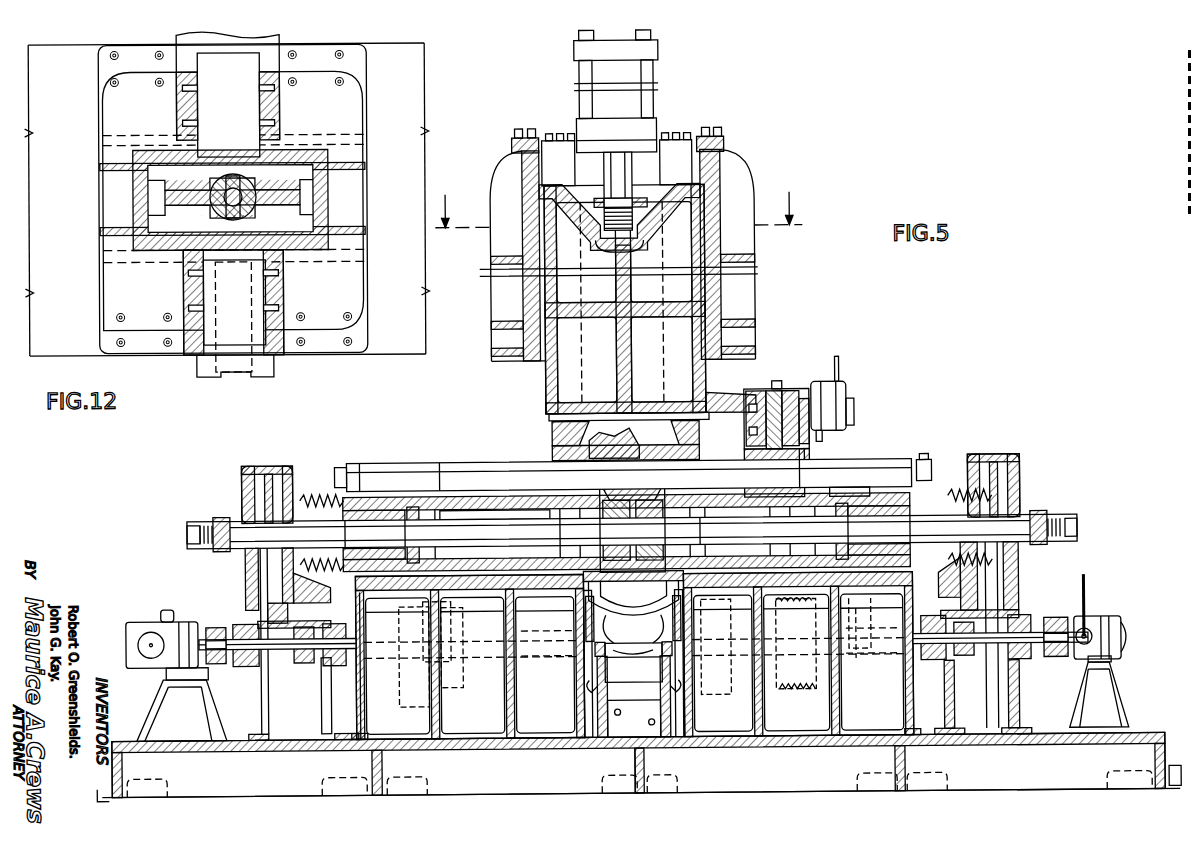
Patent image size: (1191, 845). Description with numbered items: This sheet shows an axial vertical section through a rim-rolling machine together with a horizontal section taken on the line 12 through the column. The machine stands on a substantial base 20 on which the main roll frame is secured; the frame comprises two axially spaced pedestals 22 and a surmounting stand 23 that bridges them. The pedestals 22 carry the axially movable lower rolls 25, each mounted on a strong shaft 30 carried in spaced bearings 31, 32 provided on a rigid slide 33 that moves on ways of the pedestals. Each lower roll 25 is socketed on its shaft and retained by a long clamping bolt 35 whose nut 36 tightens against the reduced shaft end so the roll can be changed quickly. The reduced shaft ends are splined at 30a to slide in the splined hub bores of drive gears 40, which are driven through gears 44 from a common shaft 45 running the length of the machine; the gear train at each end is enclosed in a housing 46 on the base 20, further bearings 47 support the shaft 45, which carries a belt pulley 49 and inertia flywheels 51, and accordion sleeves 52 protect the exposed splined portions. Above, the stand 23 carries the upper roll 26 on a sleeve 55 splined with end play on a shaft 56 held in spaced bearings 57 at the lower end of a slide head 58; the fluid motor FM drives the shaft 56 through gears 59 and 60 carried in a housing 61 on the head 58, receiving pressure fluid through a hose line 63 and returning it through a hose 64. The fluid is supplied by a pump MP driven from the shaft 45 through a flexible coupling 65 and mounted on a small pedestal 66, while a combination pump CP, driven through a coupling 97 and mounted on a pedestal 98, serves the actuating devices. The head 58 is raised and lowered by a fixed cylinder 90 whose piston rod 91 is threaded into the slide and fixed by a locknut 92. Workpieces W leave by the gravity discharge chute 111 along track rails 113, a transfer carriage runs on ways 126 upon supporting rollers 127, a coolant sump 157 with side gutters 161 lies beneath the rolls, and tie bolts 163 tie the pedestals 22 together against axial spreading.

In FIG. 5, the base 20 is at (1150, 737).
In FIG. 5, the pedestal 22 is at (355, 706).
In FIG. 12, the stand 23 is at (280, 110).
In FIG. 5, the stand 23 is at (733, 302).
In FIG. 5, the lower roll 25 is at (635, 583).
In FIG. 5, the upper roll 26 is at (630, 436).
In FIG. 5, the shaft 30 is at (632, 531).
In FIG. 5, the splined portion 30a is at (324, 505).
In FIG. 5, the bearing 31 is at (540, 490).
In FIG. 5, the bearing 32 is at (385, 498).
In FIG. 5, the slide 33 is at (483, 582).
In FIG. 5, the clamping bolt 35 is at (210, 541).
In FIG. 5, the nut 36 is at (226, 515).
In FIG. 5, the drive gear 40 is at (278, 467).
In FIG. 5, the gear 44 is at (302, 660).
In FIG. 5, the common shaft 45 is at (275, 657).
In FIG. 5, the housing 46 is at (255, 615).
In FIG. 5, the bearing 47 is at (450, 686).
In FIG. 5, the pulley 49 is at (792, 688).
In FIG. 5, the inertia flywheel 51 is at (405, 705).
In FIG. 5, the accordion sleeve 52 is at (326, 560).
In FIG. 5, the sleeve 55 is at (603, 450).
In FIG. 5, the upper roll shaft 56 is at (548, 468).
In FIG. 5, the bearing 57 is at (560, 440).
In FIG. 12, the slide head 58 is at (172, 252).
In FIG. 5, the slide head 58 is at (730, 394).
In FIG. 5, the gear 59 is at (806, 493).
In FIG. 5, the gear 60 is at (762, 398).
In FIG. 5, the housing 61 is at (792, 392).
In FIG. 5, the flexible hose line 63 is at (1087, 598).
In FIG. 5, the flexible hose 64 is at (822, 440).
In FIG. 5, the flexible coupling 65 is at (1052, 658).
In FIG. 5, the pedestal 66 is at (1115, 699).
In FIG. 5, the cylinder 90 is at (642, 110).
In FIG. 12, the piston rod 91 is at (234, 178).
In FIG. 5, the piston rod 91 is at (626, 180).
In FIG. 5, the locknut 92 is at (606, 198).
In FIG. 5, the flexible coupling 97 is at (213, 658).
In FIG. 5, the pedestal 98 is at (155, 708).
In FIG. 5, the gravity discharge chute 111 is at (621, 619).
In FIG. 5, the track rail 113 is at (634, 643).
In FIG. 5, the way 126 is at (633, 662).
In FIG. 5, the supporting roller 127 is at (641, 642).
In FIG. 5, the sump 157 is at (628, 760).
In FIG. 5, the gutter 161 is at (639, 664).
In FIG. 5, the tie bolt 163 is at (928, 462).
In FIG. 5, the section line 12 is at (624, 204).
In FIG. 5, the workpiece W is at (633, 627).
In FIG. 5, the combination pump CP is at (140, 620).
In FIG. 5, the pump MP is at (1113, 623).
In FIG. 5, the fluid motor FM is at (848, 390).